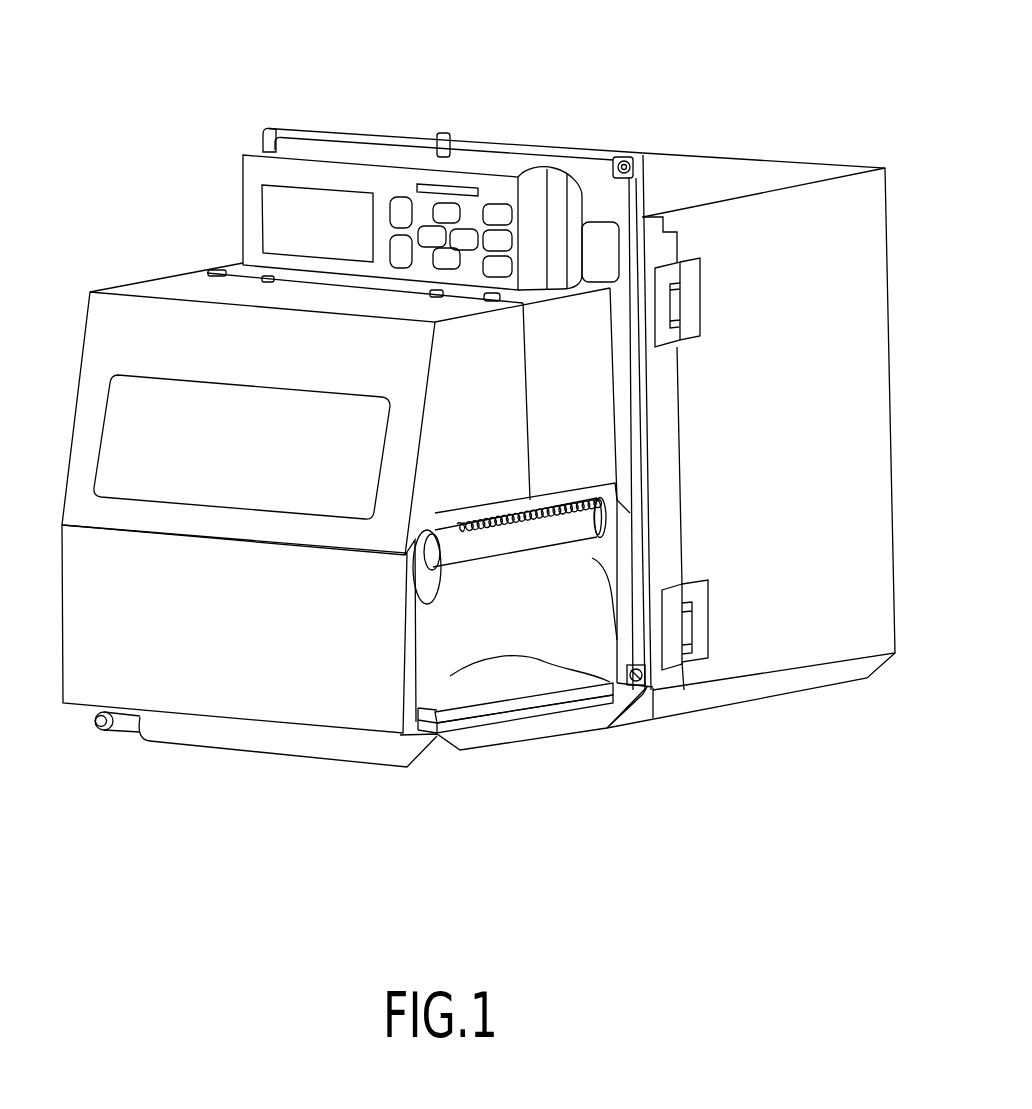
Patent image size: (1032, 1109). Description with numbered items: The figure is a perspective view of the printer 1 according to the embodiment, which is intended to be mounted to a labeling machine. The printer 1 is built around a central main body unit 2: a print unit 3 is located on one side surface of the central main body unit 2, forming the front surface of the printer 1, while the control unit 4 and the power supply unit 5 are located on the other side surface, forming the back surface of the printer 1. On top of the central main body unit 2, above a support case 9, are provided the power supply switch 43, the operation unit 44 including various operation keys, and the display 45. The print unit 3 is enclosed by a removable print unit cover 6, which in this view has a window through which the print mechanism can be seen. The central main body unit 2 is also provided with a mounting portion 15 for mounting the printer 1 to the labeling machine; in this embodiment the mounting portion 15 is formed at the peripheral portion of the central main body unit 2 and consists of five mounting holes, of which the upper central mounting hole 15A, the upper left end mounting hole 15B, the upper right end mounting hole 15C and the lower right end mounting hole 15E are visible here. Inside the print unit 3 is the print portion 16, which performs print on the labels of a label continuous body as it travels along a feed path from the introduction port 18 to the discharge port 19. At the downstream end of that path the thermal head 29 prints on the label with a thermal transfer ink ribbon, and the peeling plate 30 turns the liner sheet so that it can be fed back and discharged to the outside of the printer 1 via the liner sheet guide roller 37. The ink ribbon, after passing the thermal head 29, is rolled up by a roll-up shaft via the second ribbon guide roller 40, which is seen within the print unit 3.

The printer 1 is at (684, 86).
The central main body unit 2 is at (401, 137).
The print unit 3 is at (375, 774).
The control unit 4 is at (548, 140).
The power supply unit 5 is at (762, 157).
The print unit cover 6 is at (86, 326).
The support case 9 is at (614, 397).
The mounting portion 15 is at (257, 131).
The upper central mounting hole 15A is at (447, 140).
The upper left end mounting hole 15B is at (270, 130).
The upper right end mounting hole 15C is at (627, 158).
The lower right end mounting hole 15E is at (637, 693).
The print portion 16 is at (453, 727).
The introduction port 18 is at (92, 714).
The discharge port 19 is at (468, 697).
The thermal head 29 is at (580, 693).
The peeling plate 30 is at (543, 712).
The liner sheet guide roller 37 is at (130, 723).
The second ribbon guide roller 40 is at (577, 523).
The power supply switch 43 is at (603, 248).
The operation unit 44 is at (424, 270).
The display 45 is at (279, 205).